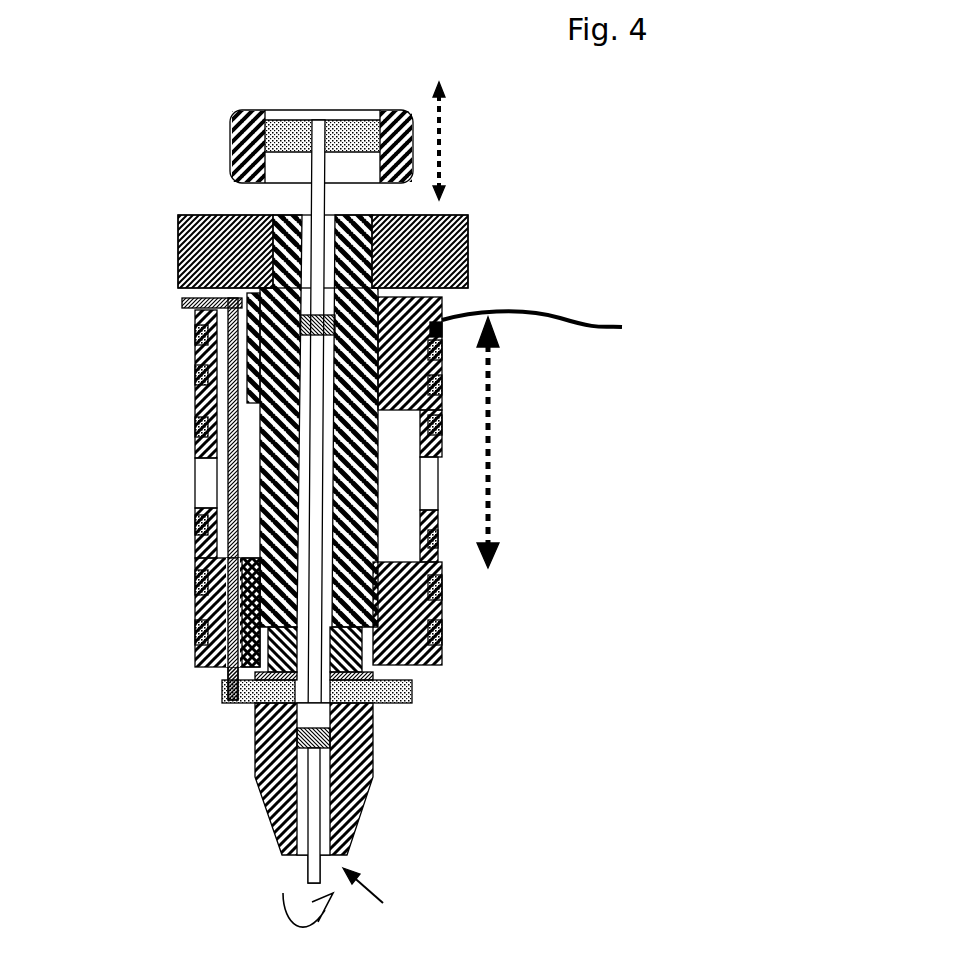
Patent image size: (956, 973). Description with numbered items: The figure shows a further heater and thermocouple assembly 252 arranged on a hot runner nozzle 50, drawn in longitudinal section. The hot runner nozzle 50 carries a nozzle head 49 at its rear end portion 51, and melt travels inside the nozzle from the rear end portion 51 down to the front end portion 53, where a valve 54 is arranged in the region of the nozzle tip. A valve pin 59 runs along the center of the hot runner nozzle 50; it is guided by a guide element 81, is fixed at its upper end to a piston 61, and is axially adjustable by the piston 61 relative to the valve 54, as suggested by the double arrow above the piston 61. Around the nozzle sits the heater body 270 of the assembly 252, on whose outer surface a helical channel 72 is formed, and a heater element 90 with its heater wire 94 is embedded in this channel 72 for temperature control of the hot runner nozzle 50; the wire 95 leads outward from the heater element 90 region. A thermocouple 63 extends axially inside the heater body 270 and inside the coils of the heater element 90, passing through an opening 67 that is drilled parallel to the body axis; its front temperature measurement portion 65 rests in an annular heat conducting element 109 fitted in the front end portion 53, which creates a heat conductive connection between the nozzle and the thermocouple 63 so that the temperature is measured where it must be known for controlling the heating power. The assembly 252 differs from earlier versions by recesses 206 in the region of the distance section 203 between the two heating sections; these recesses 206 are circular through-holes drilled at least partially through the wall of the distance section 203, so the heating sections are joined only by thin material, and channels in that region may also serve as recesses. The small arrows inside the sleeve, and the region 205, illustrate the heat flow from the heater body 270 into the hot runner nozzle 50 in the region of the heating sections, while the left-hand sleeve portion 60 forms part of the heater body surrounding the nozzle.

The nozzle head 49 is at (193, 257).
The hot runner nozzle 50 is at (521, 212).
The rear end portion 51 is at (280, 220).
The front end portion 53 is at (367, 763).
The valve 54 is at (363, 901).
The valve pin 59 is at (313, 827).
The left sleeve 60 is at (197, 430).
The piston 61 is at (360, 135).
The thermocouple 63 is at (228, 533).
The temperature measurement portion 65 is at (223, 695).
The opening 67 is at (222, 667).
The helical channel 72 is at (437, 612).
The guide element 81 is at (290, 327).
The heater element 90 is at (435, 590).
The heater wire 94 is at (442, 330).
The wire 95 is at (556, 329).
The heat conducting element 109 is at (248, 705).
The distance section 203 is at (435, 450).
The channel 205 is at (437, 570).
The recess 206 is at (205, 482).
The heater and thermocouple assembly 252 is at (499, 277).
The heater body 270 is at (445, 305).